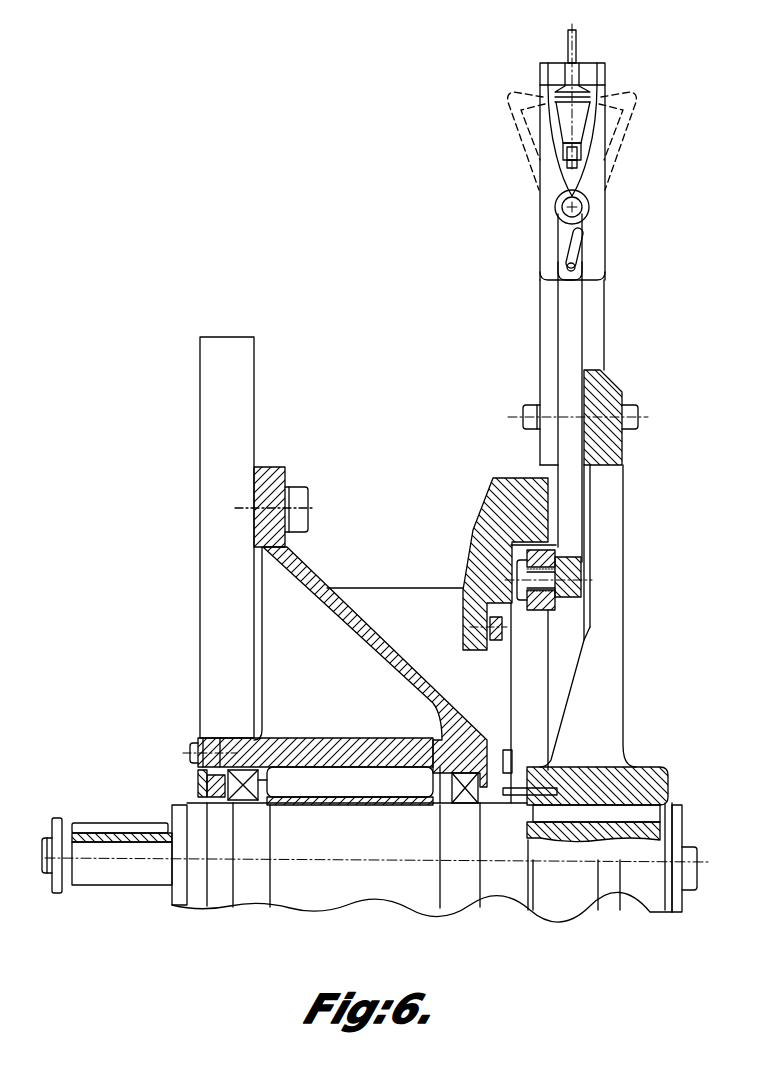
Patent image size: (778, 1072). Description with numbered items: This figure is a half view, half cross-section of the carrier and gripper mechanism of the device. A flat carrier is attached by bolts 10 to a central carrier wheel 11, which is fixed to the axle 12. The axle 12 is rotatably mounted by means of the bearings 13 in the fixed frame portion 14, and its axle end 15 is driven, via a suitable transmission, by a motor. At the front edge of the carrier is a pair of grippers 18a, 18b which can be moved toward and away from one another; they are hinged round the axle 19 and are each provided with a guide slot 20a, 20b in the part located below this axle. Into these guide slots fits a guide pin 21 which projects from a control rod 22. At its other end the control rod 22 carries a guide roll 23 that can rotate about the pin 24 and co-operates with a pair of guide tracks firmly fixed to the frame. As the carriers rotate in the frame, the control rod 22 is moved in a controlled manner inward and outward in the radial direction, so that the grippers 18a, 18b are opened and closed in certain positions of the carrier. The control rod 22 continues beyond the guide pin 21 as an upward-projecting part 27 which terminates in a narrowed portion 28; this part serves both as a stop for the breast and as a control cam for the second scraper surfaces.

The bolts 10 is at (640, 409).
The central carrier wheel 11 is at (613, 522).
The axle 12 is at (364, 887).
The bearings 13 is at (268, 786).
The fixed frame portion 14 is at (188, 773).
The axle end 15 is at (107, 875).
The gripper 18a is at (555, 183).
The gripper 18b is at (594, 187).
The axle 19 is at (578, 209).
The guide slot 20a is at (562, 253).
The guide slot 20b is at (582, 234).
The guide pin 21 is at (574, 268).
The control rod 22 is at (573, 347).
The guide roll 23 is at (540, 608).
The pin 24 is at (583, 580).
The upward-projecting part 27 is at (604, 90).
The narrowed portion 28 is at (577, 44).